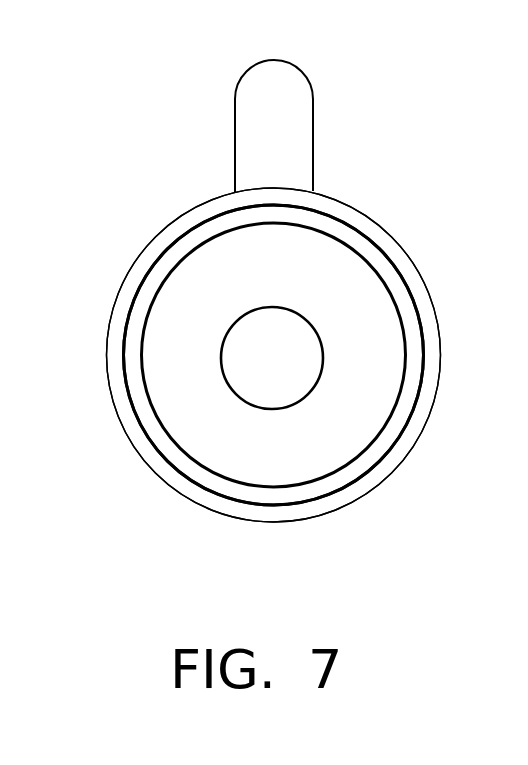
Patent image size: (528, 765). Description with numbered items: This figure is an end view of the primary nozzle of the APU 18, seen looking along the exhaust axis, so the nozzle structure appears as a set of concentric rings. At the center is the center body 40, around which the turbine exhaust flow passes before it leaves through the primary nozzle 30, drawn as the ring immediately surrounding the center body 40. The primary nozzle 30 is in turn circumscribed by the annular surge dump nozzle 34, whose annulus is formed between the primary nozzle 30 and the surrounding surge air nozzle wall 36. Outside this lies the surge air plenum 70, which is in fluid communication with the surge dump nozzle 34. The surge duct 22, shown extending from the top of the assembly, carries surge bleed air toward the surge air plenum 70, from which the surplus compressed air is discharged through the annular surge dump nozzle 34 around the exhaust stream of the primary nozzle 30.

The APU 18 is at (198, 529).
The surge duct 22 is at (253, 67).
The primary nozzle 30 is at (195, 223).
The annular surge dump nozzle 34 is at (350, 238).
The surge air nozzle wall 36 is at (207, 243).
The center body 40 is at (268, 390).
The surge air plenum 70 is at (143, 264).